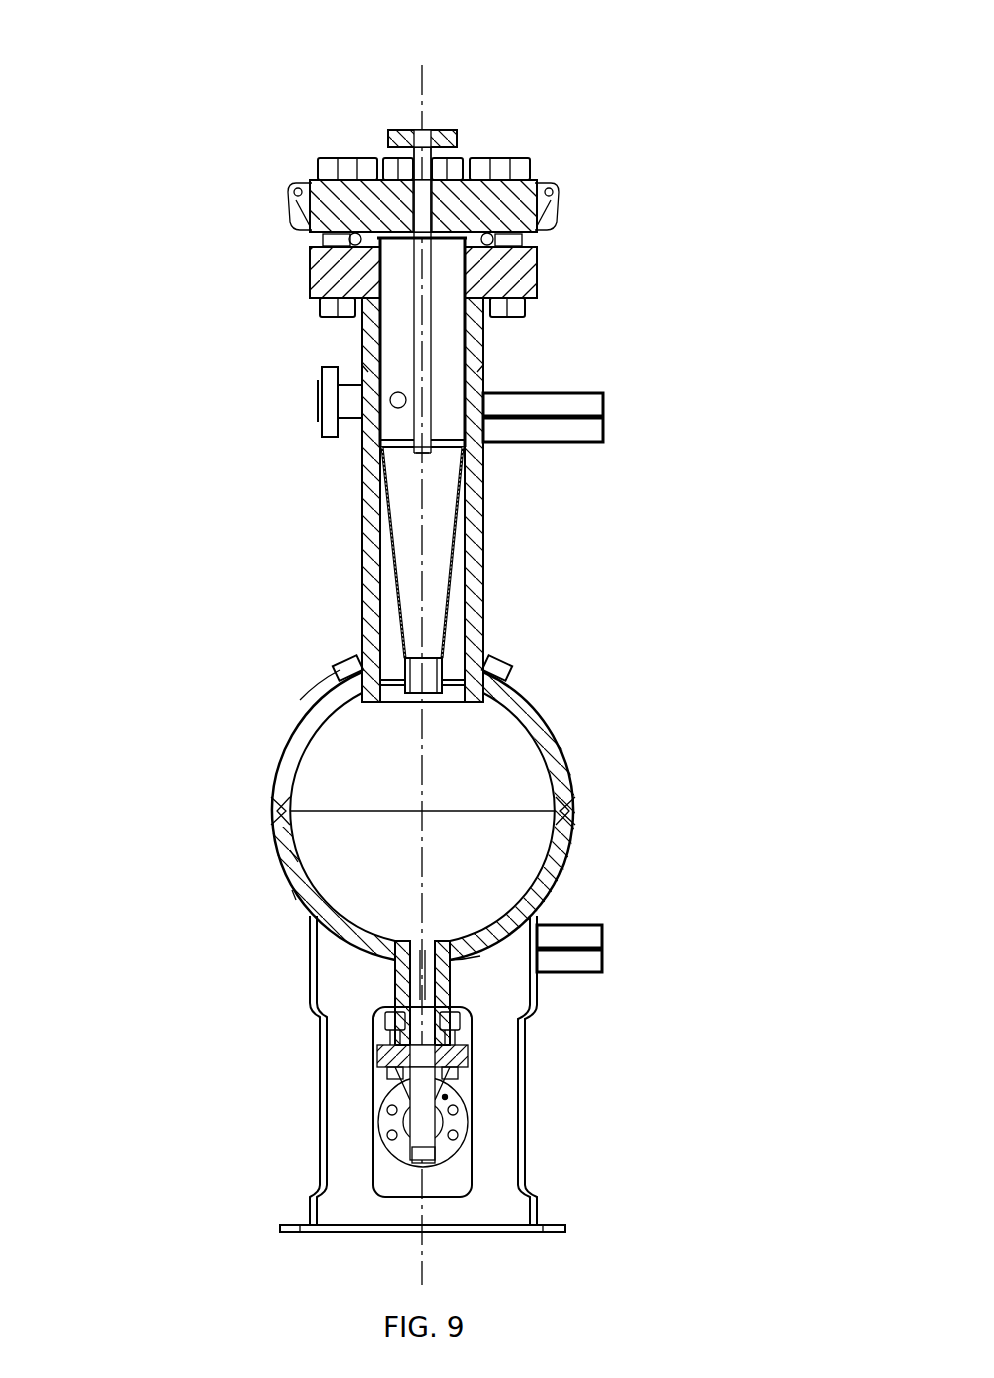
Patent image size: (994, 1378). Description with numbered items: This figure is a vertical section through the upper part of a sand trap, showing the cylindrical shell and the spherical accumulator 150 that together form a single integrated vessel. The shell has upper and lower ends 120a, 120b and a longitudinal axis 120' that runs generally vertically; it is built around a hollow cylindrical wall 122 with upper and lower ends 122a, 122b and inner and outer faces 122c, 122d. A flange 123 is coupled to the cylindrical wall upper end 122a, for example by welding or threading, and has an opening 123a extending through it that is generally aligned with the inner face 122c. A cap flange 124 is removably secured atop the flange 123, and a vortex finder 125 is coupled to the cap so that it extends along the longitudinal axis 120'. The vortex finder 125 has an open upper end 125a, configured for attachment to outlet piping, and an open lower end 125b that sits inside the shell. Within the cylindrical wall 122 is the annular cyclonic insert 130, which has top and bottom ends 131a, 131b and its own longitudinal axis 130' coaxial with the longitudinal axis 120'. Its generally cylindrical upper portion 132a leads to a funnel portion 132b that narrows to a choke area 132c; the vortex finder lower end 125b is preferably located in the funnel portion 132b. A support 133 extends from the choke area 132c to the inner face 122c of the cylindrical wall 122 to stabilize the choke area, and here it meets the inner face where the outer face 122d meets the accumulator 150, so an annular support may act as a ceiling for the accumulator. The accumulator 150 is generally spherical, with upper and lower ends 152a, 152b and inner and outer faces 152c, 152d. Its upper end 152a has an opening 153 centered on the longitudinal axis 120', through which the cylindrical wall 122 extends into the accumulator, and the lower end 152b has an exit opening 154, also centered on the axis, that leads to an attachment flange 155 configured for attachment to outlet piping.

The longitudinal axis 120' is at (326, 675).
The upper end of cylindrical shell 120a is at (247, 238).
The lower end of cylindrical shell 120b is at (482, 710).
The hollow cylindrical wall 122 is at (470, 561).
The upper end of cylindrical wall 122a is at (483, 372).
The lower end of cylindrical wall 122b is at (360, 660).
The inner face of cylindrical wall 122c is at (468, 592).
The outer face of cylindrical wall 122d is at (483, 621).
The flange 123 is at (447, 270).
The opening 123a is at (470, 266).
The flange (cap) 124 is at (520, 208).
The vortex finder 125 is at (414, 356).
The open upper end of vortex finder 125a is at (436, 132).
The open lower end of vortex finder 125b is at (432, 455).
The cyclonic insert 130 is at (549, 552).
The longitudinal axis of cyclonic insert 130' is at (303, 627).
The top end of cyclonic insert 131a is at (355, 232).
The bottom end of cyclonic insert 131b is at (370, 673).
The upper portion of cyclonic insert 132a is at (310, 250).
The funnel portion 132b is at (397, 463).
The choke area 132c is at (405, 672).
The support (stabilizer) 133 is at (382, 702).
The accumulator 150 is at (573, 878).
The upper end of accumulator 152a is at (287, 674).
The lower end of accumulator 152b is at (477, 967).
The inner face of accumulator 152c is at (300, 858).
The outer face of accumulator 152d is at (298, 896).
The opening 153 is at (457, 717).
The exit opening 154 is at (400, 932).
The attachment flange 155 is at (357, 1062).